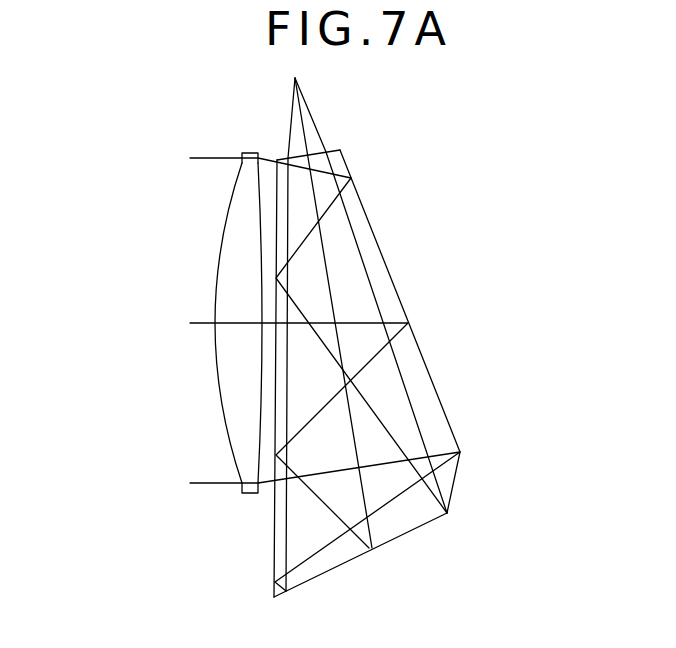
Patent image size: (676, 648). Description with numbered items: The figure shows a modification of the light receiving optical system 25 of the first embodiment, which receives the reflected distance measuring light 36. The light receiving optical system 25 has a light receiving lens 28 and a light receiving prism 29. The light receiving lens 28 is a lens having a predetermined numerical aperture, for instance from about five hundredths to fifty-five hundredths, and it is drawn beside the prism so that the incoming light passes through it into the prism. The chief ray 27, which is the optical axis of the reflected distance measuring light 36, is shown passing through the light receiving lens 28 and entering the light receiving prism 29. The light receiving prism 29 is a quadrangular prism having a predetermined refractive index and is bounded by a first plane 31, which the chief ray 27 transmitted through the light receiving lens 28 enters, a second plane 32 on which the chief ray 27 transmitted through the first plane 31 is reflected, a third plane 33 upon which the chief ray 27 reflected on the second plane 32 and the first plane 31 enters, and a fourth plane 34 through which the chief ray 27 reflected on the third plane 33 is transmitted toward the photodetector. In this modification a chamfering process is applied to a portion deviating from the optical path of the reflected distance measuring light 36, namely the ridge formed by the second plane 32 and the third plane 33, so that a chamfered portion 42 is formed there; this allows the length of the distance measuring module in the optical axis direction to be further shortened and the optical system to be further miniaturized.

The light receiving optical system 25 is at (97, 119).
The chief ray 27 is at (195, 322).
The light receiving lens 28 is at (217, 418).
The reflected distance measuring light 36 is at (207, 157).
The light receiving prism 29 is at (392, 228).
The first plane 31 is at (274, 536).
The second plane 32 is at (432, 380).
The third plane 33 is at (393, 538).
The fourth plane 34 is at (322, 148).
The chamfered portion 42 is at (453, 480).